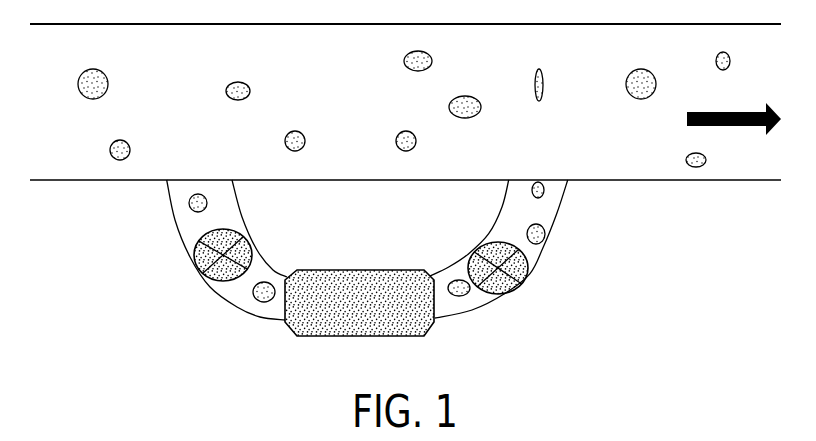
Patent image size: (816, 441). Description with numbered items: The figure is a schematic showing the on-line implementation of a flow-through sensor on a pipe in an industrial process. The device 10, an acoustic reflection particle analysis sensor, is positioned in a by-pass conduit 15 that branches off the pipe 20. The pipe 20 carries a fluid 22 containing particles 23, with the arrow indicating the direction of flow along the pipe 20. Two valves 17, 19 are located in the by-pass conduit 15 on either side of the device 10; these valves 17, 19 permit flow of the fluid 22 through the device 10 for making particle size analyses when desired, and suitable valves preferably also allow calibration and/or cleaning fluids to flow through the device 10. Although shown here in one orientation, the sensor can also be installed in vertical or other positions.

The device 10 is at (362, 270).
The by-pass conduit 15 is at (562, 223).
The valve 17 is at (195, 263).
The valve 19 is at (490, 295).
The pipe 20 is at (88, 181).
The fluid 22 is at (193, 102).
The particles 23 is at (432, 55).